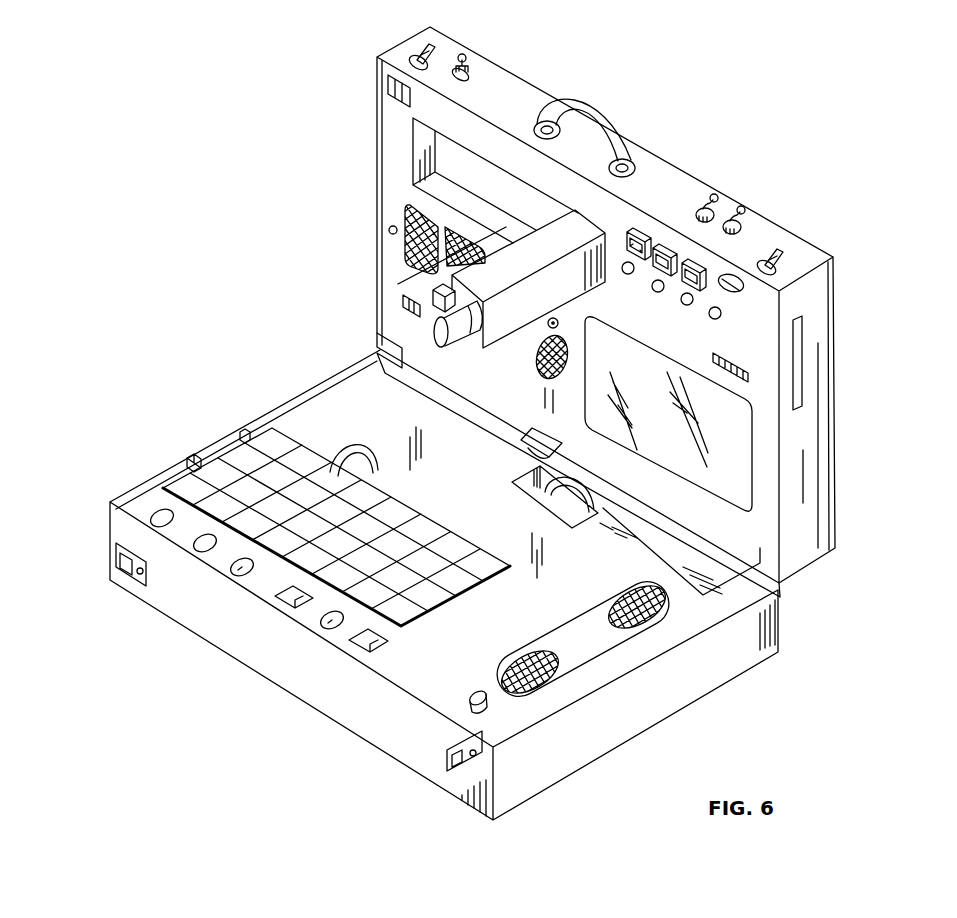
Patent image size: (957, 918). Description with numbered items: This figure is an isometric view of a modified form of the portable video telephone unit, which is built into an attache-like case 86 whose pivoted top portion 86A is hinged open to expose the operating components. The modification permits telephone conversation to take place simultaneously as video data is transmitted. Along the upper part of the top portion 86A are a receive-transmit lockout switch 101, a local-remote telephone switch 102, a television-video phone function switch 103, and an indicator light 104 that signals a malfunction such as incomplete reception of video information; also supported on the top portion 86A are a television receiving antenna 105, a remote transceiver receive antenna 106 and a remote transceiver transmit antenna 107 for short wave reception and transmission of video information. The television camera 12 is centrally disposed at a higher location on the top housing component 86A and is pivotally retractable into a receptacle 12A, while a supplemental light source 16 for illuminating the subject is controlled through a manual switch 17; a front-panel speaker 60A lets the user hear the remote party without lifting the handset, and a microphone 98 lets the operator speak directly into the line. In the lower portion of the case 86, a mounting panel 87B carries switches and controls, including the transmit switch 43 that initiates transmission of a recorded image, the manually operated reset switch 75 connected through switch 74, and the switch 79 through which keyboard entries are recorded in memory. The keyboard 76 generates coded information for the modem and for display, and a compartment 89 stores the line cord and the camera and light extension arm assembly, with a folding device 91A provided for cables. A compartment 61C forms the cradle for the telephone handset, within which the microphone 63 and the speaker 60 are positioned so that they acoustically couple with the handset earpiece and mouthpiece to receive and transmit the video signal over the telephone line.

The television camera 12 is at (547, 307).
The storage compartment 12A is at (450, 160).
The supplemental light source 16 is at (420, 234).
The manual switch 17 is at (402, 313).
The transmit switch 43 is at (197, 557).
The speaker 60 is at (640, 628).
The speaker 60A is at (398, 284).
The compartment 61C is at (587, 645).
The microphone 63 is at (533, 693).
The switch 74 is at (293, 600).
The manually operated switch 75 is at (240, 575).
The keyboard 76 is at (213, 467).
The switch 79 is at (370, 644).
The attache-like case 86 is at (780, 655).
The pivoted top portion 86A is at (836, 455).
The mounting panel 87B is at (328, 623).
The compartment 89 is at (158, 512).
The folding device 91A is at (386, 92).
The microphone 98 is at (540, 373).
The receive-transmit lockout switch 101 is at (640, 228).
The local-remote telephone switch 102 is at (667, 244).
The television-video phone function switch 103 is at (700, 262).
The indicator light 104 is at (742, 292).
The television receiving antenna 105 is at (466, 60).
The remote transceiver receive antenna 106 is at (710, 205).
The remote transceiver transmit antenna 107 is at (740, 215).